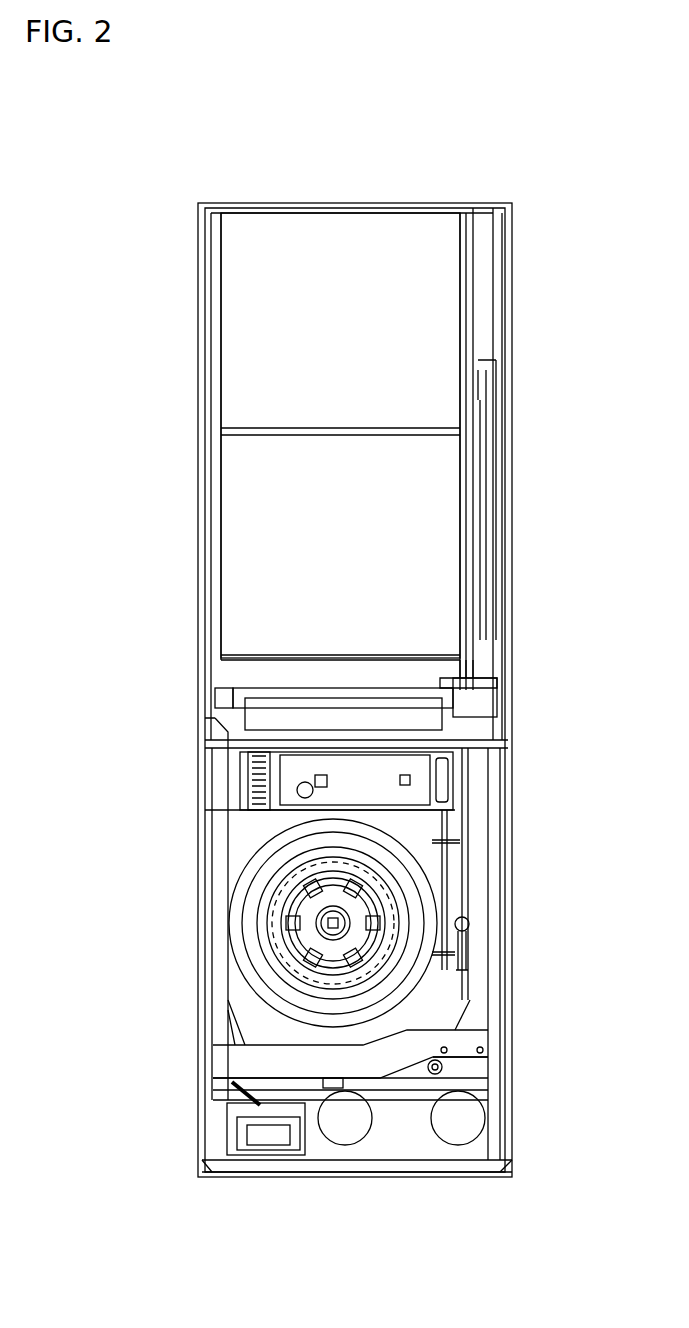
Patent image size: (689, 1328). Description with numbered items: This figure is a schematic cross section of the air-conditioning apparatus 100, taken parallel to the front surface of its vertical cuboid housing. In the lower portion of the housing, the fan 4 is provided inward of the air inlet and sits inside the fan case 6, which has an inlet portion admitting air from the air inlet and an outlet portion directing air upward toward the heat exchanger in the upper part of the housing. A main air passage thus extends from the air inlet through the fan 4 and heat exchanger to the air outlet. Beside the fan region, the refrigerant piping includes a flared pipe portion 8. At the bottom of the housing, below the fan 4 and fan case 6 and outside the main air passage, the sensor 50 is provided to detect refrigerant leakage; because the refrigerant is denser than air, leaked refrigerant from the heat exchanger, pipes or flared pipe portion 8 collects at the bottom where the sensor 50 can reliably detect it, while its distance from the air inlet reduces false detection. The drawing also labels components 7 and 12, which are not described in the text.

The air-conditioning apparatus 100 is at (310, 192).
The heat exchanger panel 7 is at (403, 347).
The fan 4 is at (378, 878).
The flared pipe portion 8 is at (468, 912).
The fan case 6 is at (462, 996).
The outlet openings 12 is at (400, 1123).
The sensor 50 is at (268, 1158).